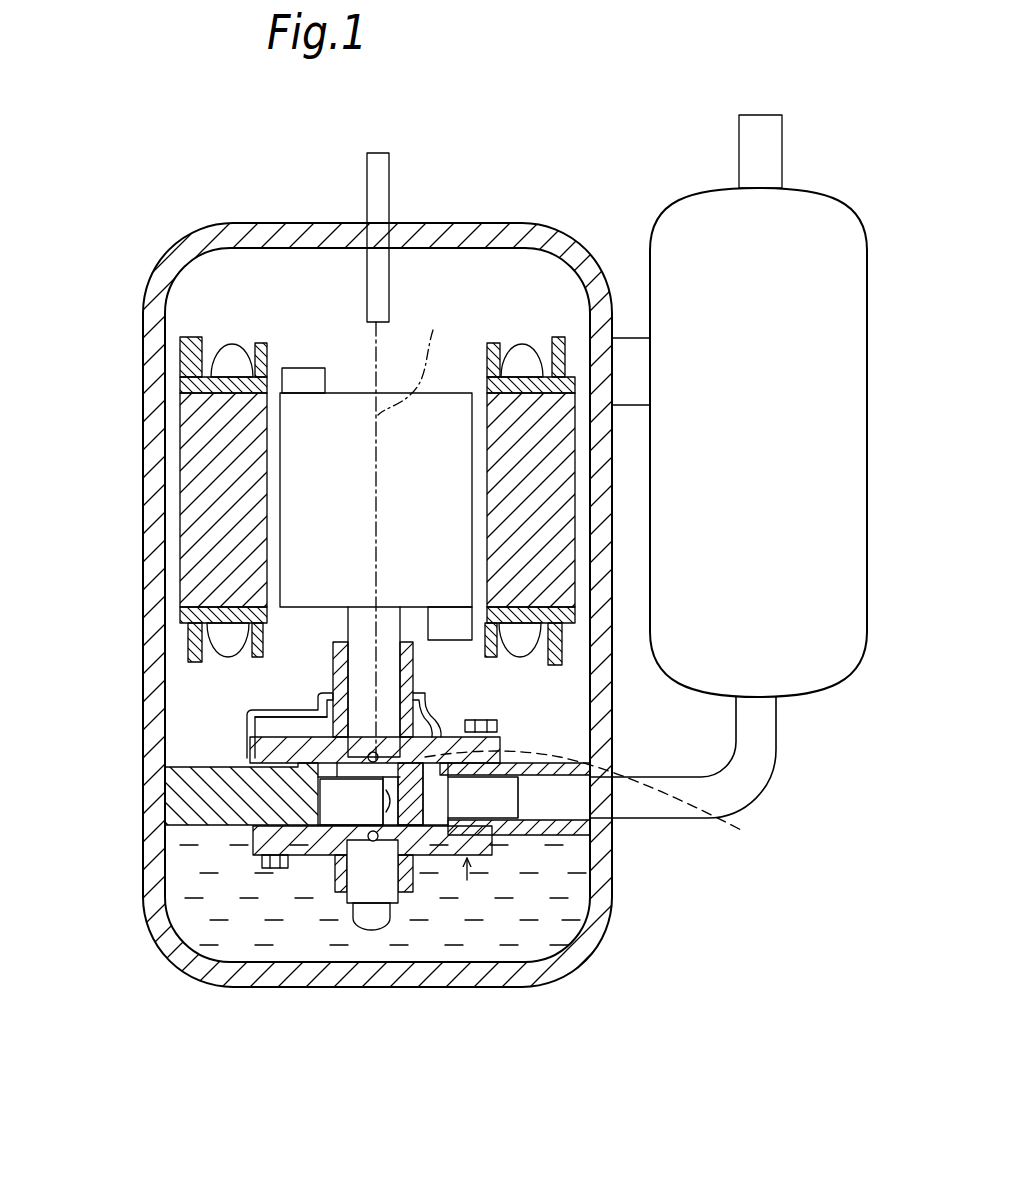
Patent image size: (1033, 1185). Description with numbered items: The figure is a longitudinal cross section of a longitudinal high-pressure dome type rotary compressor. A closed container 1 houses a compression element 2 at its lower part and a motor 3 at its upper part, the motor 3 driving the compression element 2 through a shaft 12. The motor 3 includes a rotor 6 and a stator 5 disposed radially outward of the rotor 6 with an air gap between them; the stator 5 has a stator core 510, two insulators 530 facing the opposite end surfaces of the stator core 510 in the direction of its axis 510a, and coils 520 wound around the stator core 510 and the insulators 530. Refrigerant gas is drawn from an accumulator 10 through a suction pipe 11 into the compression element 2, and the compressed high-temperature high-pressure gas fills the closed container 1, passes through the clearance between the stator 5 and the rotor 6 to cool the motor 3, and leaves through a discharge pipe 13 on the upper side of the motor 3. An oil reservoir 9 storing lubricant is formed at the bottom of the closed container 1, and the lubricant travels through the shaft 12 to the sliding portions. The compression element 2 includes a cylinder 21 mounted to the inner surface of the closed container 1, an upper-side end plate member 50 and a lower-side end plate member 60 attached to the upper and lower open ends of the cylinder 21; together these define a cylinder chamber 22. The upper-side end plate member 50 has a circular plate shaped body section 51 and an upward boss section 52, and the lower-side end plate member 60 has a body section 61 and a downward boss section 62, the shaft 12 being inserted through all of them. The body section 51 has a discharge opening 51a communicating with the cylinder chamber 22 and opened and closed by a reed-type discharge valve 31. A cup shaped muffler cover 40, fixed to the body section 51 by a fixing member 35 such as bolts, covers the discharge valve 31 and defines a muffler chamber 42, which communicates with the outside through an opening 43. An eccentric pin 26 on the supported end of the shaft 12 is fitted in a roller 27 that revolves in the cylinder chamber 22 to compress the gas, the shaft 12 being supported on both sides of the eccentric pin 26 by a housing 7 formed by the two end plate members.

The closed container 1 is at (244, 228).
The compression element 2 is at (180, 793).
The motor 3 is at (222, 338).
The stator 5 is at (316, 401).
The rotor 6 is at (347, 405).
The housing 7 is at (185, 948).
The oil reservoir 9 is at (548, 940).
The accumulator 10 is at (713, 200).
The suction pipe 11 is at (636, 800).
The shaft 12 is at (386, 615).
The discharge pipe 13 is at (395, 182).
The cylinder 21 is at (186, 824).
The cylinder chamber 22 is at (466, 886).
The eccentric pin 26 is at (340, 812).
The roller 27 is at (392, 802).
The discharge valve 31 is at (450, 712).
The fixing member 35 is at (466, 727).
The muffler cover 40 is at (258, 706).
The muffler chamber 42 is at (295, 705).
The opening 43 is at (330, 720).
The upper-side end plate member 50 is at (266, 728).
The body section 51 is at (278, 748).
The discharge opening 51a is at (619, 801).
The boss section 52 is at (415, 678).
The lower-side end plate member 60 is at (508, 880).
The body section 61 is at (282, 868).
The boss section 62 is at (346, 888).
The stator core 510 is at (200, 440).
The axis 510a is at (432, 358).
The coils 520 is at (238, 345).
The insulators 530 is at (196, 380).